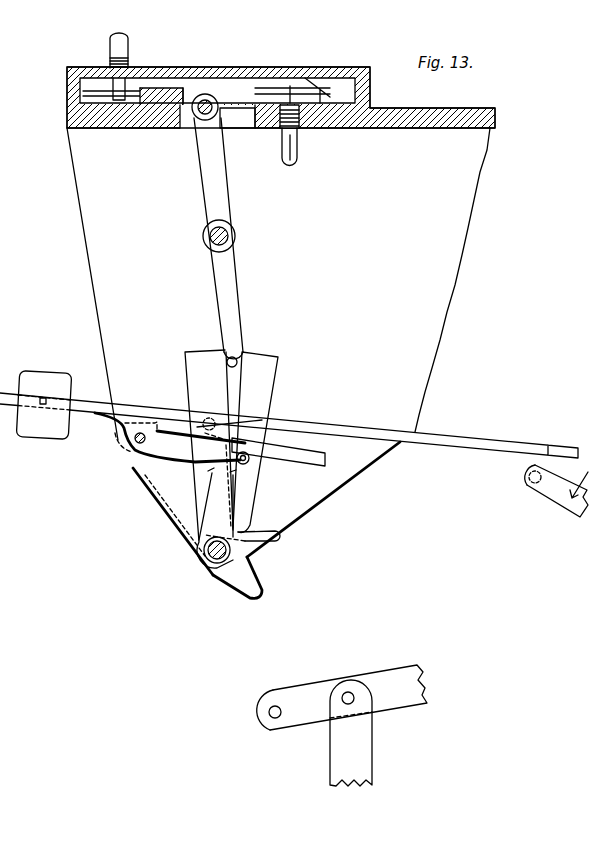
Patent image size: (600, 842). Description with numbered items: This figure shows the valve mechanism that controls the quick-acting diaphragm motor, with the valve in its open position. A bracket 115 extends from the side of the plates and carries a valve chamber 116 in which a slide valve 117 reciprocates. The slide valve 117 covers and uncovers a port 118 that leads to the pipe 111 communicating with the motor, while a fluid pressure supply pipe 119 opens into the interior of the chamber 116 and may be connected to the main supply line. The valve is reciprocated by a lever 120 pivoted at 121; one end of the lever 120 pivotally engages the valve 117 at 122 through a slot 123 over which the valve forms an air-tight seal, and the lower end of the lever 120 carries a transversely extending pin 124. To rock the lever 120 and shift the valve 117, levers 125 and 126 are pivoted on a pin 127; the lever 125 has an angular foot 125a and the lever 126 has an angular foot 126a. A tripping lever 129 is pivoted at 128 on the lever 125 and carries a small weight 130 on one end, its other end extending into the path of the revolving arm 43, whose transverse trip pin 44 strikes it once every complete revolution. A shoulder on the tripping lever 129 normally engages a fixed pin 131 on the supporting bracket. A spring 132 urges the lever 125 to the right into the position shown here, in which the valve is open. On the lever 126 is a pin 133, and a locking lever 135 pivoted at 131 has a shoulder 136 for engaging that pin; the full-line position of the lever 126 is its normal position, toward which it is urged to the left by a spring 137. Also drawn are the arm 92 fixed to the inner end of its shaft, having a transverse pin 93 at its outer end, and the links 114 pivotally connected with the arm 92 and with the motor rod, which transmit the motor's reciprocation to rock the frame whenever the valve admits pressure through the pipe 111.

The pipe 111 is at (298, 150).
The links 114 is at (329, 757).
The bracket 115 is at (434, 130).
The valve chamber 116 is at (345, 82).
The slide valve 117 is at (154, 128).
The port 118 is at (290, 110).
The fluid pressure supply pipe 119 is at (128, 56).
The lever 120 is at (241, 268).
The pivot 121 is at (231, 236).
The pivotal engagement 122 is at (203, 115).
The slot 123 is at (238, 122).
The pin 124 is at (238, 356).
The lever 125 is at (188, 384).
The angular foot 125a is at (282, 542).
The lever 126 is at (272, 384).
The angular foot 126a is at (260, 598).
The pin 127 is at (213, 562).
The pivot 128 is at (205, 428).
The tripping lever 129 is at (368, 428).
The weight 130 is at (47, 440).
The fixed pin 131 is at (132, 480).
The spring 132 is at (302, 517).
The pin 133 is at (248, 462).
The locking lever 135 is at (328, 458).
The shoulder 136 is at (262, 420).
The spring 137 is at (210, 535).
The arm 43 is at (565, 508).
The trip pin 44 is at (520, 482).
The arm 92 is at (315, 692).
The pin 93 is at (268, 722).